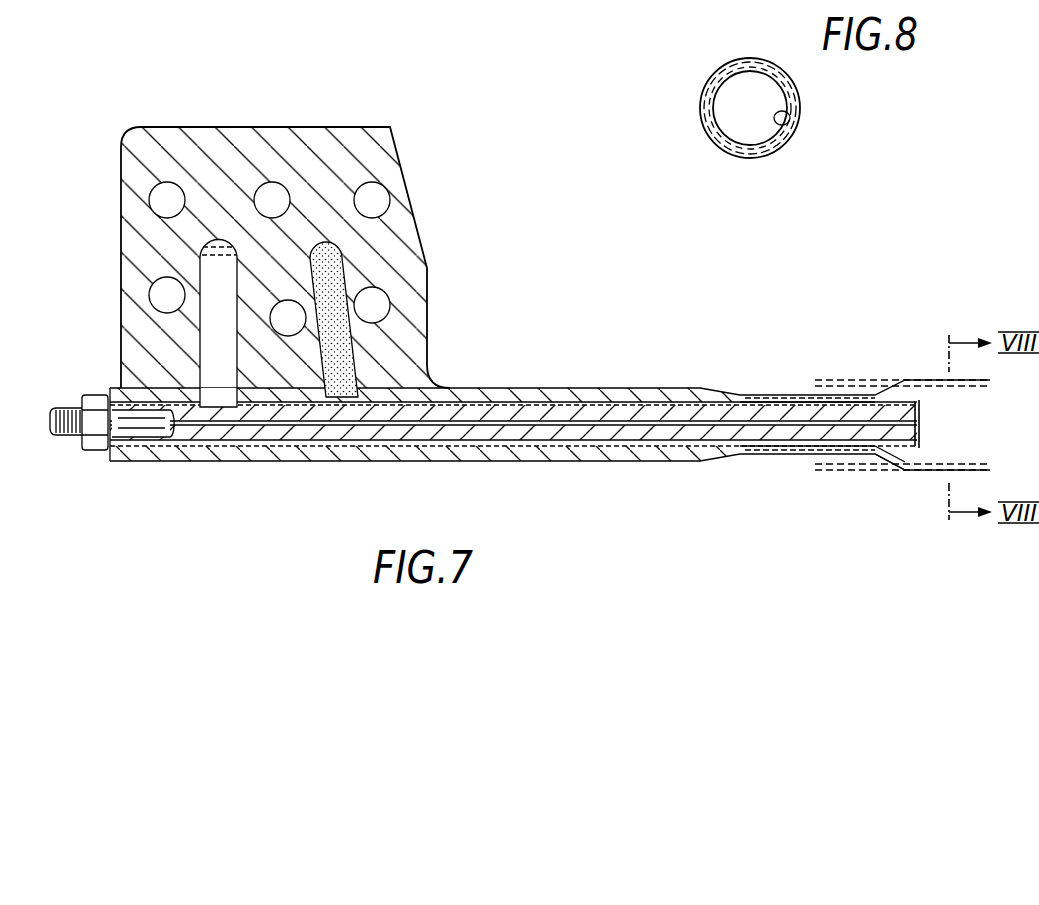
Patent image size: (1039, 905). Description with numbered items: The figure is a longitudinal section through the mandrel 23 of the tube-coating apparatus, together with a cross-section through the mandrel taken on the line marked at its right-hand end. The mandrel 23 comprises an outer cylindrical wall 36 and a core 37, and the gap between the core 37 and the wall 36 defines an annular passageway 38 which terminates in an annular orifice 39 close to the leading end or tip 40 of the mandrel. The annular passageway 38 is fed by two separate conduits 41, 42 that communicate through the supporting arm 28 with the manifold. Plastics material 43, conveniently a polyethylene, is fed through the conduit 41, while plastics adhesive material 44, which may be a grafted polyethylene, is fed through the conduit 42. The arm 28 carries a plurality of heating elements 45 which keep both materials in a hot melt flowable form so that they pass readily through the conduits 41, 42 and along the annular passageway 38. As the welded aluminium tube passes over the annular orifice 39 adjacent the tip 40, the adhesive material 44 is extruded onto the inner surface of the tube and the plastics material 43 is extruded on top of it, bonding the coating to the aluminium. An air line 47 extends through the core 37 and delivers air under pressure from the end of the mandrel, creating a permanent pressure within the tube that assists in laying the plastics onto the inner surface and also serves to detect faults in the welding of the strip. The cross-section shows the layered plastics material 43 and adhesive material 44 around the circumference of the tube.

In FIG. 7, the mandrel 23 is at (567, 386).
In FIG. 7, the supporting arm 28 is at (392, 158).
In FIG. 7, the outer cylindrical wall 36 is at (607, 388).
In FIG. 7, the core 37 is at (532, 440).
In FIG. 7, the annular passageway 38 is at (628, 447).
In FIG. 7, the annular orifice 39 is at (882, 470).
In FIG. 7, the leading end or tip 40 is at (921, 445).
In FIG. 7, the conduit 41 is at (205, 275).
In FIG. 7, the conduit 42 is at (340, 272).
In FIG. 7, the plastics material 43 is at (220, 330).
In FIG. 8, the plastics material 43 is at (790, 121).
In FIG. 7, the plastics adhesive material 44 is at (342, 352).
In FIG. 8, the plastics adhesive material 44 is at (768, 156).
In FIG. 7, the heating elements 45 is at (380, 203).
In FIG. 7, the air line 47 is at (283, 425).